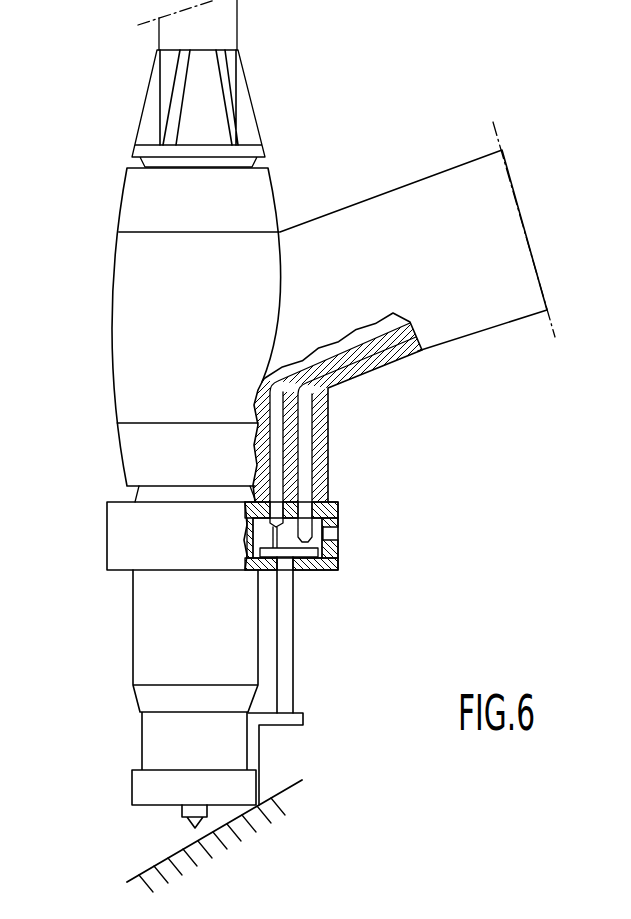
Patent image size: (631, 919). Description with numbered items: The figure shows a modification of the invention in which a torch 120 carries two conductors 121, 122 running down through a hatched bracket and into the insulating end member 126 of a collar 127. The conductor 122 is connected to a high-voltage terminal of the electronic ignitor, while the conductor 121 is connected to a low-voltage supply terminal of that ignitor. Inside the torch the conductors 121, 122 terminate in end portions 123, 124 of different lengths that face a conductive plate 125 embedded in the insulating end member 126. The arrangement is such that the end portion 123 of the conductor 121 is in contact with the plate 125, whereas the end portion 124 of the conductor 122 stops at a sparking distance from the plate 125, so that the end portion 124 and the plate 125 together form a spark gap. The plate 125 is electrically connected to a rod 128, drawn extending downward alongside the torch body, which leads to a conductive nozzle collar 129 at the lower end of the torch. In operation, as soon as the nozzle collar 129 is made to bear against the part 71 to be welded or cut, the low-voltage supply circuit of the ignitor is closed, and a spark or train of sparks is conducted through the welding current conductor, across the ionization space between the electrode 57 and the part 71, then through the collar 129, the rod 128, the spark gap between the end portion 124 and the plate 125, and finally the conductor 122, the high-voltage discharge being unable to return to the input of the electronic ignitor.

The torch 120 is at (105, 394).
The conductor 121 is at (333, 437).
The conductor 122 is at (400, 337).
The end portion 123 is at (313, 572).
The end portion 124 is at (332, 515).
The conductive plate 125 is at (340, 560).
The insulating end member 126 is at (330, 497).
The collar 127 is at (113, 580).
The rod 128 is at (285, 625).
The conductive nozzle collar 129 is at (243, 787).
The electrode 57 is at (186, 818).
The part to be welded or cut 71 is at (147, 868).